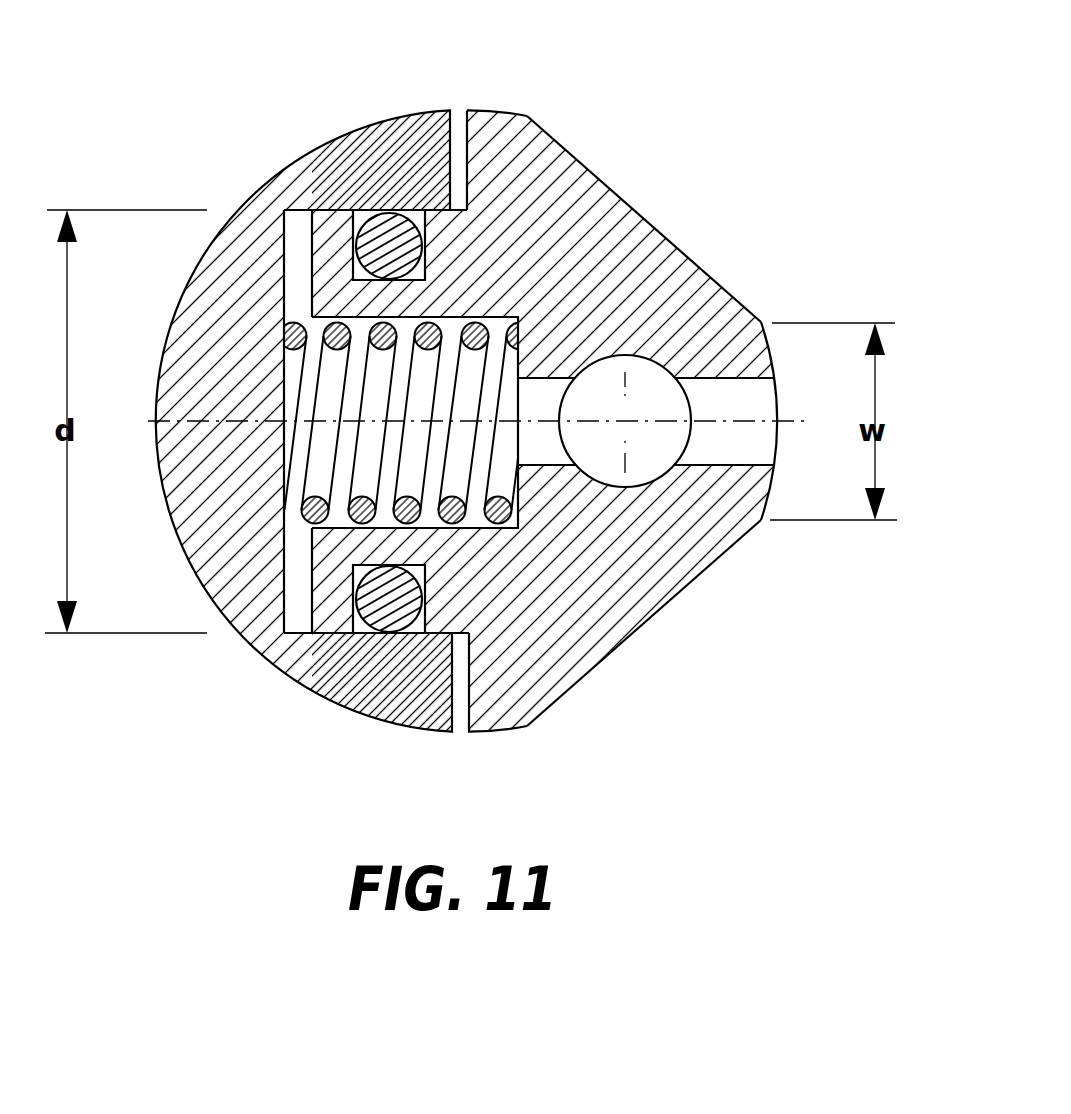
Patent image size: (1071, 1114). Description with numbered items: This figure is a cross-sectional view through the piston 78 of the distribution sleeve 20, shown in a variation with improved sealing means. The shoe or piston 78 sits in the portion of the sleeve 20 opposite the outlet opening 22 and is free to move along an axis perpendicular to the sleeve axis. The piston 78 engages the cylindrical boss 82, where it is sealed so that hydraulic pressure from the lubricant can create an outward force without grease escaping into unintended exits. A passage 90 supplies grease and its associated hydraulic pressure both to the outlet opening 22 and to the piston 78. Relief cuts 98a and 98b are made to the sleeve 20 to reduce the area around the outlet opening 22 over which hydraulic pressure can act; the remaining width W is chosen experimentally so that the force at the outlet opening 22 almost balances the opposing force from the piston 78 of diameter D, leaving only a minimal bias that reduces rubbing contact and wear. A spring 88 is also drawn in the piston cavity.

The sleeve 20 is at (488, 110).
The outlet opening 22 is at (767, 403).
The piston 78 is at (280, 678).
The cylindrical boss 82 is at (333, 208).
The spring 88 is at (318, 460).
The passage 90 is at (625, 433).
The relief cut 98a is at (675, 212).
The relief cut 98b is at (637, 657).